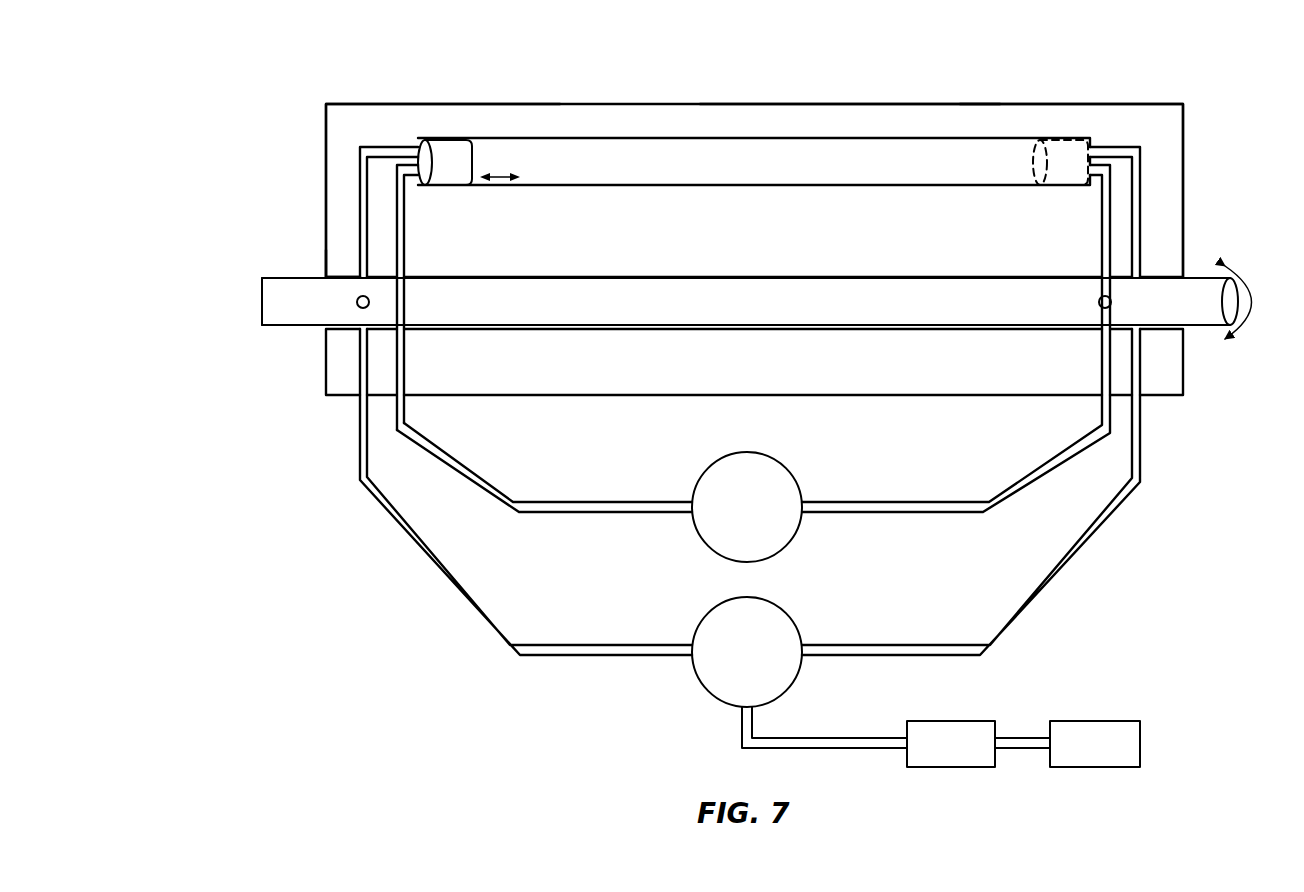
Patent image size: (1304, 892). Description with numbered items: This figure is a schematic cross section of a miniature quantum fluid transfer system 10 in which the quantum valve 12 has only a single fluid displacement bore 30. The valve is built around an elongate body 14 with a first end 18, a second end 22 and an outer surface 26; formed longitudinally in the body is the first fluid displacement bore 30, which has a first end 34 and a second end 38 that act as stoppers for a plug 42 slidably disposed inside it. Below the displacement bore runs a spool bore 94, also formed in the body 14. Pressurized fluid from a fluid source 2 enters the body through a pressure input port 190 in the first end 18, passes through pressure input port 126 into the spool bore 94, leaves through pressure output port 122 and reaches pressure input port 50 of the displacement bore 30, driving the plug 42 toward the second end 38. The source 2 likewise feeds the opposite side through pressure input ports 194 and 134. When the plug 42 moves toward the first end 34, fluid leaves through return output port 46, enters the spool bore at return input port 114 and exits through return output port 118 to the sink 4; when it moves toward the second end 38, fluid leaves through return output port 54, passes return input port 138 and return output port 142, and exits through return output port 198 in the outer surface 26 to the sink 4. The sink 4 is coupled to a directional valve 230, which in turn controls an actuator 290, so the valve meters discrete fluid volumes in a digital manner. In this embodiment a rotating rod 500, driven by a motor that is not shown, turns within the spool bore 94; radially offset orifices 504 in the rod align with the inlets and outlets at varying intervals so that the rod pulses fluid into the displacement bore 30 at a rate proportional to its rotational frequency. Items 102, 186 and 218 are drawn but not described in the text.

The quantum fluid transfer system 10 is at (1242, 60).
The quantum valve 12 is at (1245, 164).
The elongate body 14 is at (603, 117).
The first end 18 is at (373, 120).
The second end 22 is at (1165, 123).
The outer surface 26 is at (927, 99).
The first fluid displacement bore 30 is at (508, 148).
The first end 34 is at (422, 140).
The second end 38 is at (1090, 132).
The plug 42 is at (453, 150).
The return output port 46 is at (375, 133).
The pressure input port 50 is at (437, 205).
The return output port 54 is at (1110, 128).
The spool bore 94 is at (314, 266).
The shaft seal 102 is at (310, 315).
The return input port 114 is at (378, 258).
The return output port 118 is at (380, 351).
The pressure output port 122 is at (445, 264).
The pressure input port 126 is at (440, 346).
The pressure input port 134 is at (1075, 342).
The return input port 138 is at (1160, 255).
The return output port 142 is at (1167, 352).
The return outlet port 186 is at (380, 393).
The pressure input port 190 is at (440, 389).
The pressure input port 194 is at (1070, 388).
The return output port 198 is at (1155, 394).
The fluid source 2 is at (775, 535).
The sink 4 is at (775, 680).
The drain line 218 is at (818, 742).
The directional valve 230 is at (975, 757).
The actuator 290 is at (1107, 752).
The rotating rod 500 is at (290, 292).
The orifices 504 is at (357, 303).